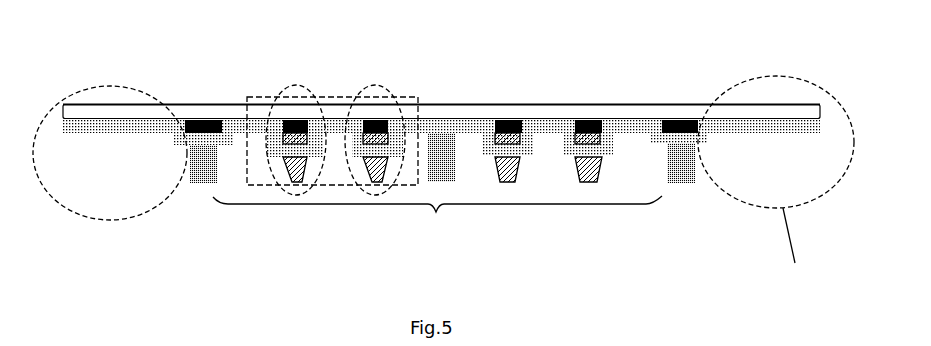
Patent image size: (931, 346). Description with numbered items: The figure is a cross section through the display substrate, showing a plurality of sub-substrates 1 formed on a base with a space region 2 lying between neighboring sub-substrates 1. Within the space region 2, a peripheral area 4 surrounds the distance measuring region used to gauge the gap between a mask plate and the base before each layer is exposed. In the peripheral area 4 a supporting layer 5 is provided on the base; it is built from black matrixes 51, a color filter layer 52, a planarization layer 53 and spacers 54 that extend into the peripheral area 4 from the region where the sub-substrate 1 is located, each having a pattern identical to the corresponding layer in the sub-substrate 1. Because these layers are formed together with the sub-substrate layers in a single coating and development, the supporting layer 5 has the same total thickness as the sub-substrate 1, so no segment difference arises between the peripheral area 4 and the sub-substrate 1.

The sub-substrate 1 is at (100, 220).
The space region 2 is at (436, 213).
The peripheral area 4 is at (247, 97).
The supporting layer 5 is at (375, 88).
The black matrixes 51 is at (296, 120).
The color filter layer 52 is at (387, 121).
The planarization layer 53 is at (367, 137).
The spacers 54 is at (303, 137).